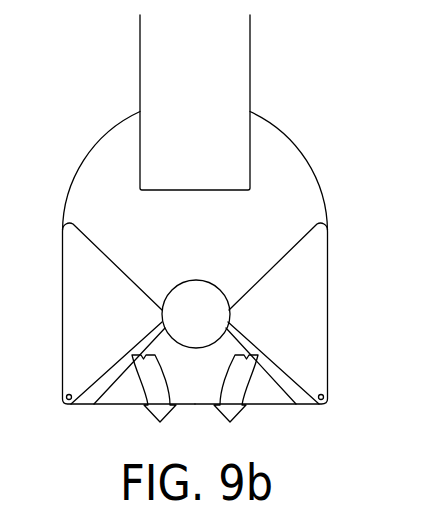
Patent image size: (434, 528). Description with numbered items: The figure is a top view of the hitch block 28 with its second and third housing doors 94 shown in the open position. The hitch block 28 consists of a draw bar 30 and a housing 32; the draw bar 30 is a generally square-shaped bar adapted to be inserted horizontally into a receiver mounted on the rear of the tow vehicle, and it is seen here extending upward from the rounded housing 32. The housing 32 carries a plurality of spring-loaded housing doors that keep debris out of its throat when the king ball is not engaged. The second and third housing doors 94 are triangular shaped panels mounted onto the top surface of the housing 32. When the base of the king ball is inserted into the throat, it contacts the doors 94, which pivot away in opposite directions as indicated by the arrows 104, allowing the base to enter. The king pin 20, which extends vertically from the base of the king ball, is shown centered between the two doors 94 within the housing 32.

The king pin 20 is at (196, 315).
The hitch block 28 is at (98, 142).
The draw bar 30 is at (232, 62).
The housing 32 is at (323, 189).
The second and third housing doors 94 is at (84, 312).
The arrows 104 is at (141, 388).